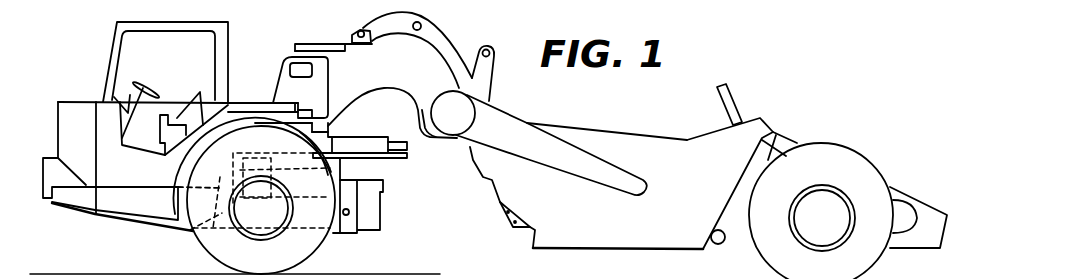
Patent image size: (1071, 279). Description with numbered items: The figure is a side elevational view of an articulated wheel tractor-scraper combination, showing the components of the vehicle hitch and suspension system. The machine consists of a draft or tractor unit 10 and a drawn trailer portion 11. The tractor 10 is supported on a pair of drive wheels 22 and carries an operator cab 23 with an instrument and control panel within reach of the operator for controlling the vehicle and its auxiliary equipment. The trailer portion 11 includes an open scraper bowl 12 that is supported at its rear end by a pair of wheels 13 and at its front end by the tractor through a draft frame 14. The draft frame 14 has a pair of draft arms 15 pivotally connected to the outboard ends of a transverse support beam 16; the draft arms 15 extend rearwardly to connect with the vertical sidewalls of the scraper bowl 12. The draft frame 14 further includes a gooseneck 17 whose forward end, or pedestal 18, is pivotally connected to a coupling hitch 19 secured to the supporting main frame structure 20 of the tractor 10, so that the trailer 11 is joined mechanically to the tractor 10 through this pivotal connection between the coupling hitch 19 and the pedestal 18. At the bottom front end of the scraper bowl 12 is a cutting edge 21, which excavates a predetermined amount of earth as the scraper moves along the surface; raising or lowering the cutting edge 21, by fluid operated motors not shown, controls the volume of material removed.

The tractor unit 10 is at (98, 25).
The trailer portion 11 is at (705, 63).
The scraper bowl 12 is at (748, 122).
The wheels 13 is at (898, 126).
The draft frame 14 is at (455, 25).
The draft arms 15 is at (510, 137).
The transverse support beam 16 is at (455, 122).
The gooseneck 17 is at (337, 36).
The pedestal 18 is at (312, 21).
The coupling hitch 19 is at (255, 84).
The main frame structure 20 is at (348, 230).
The cutting edge 21 is at (578, 247).
The drive wheels 22 is at (200, 250).
The operator cab 23 is at (213, 19).